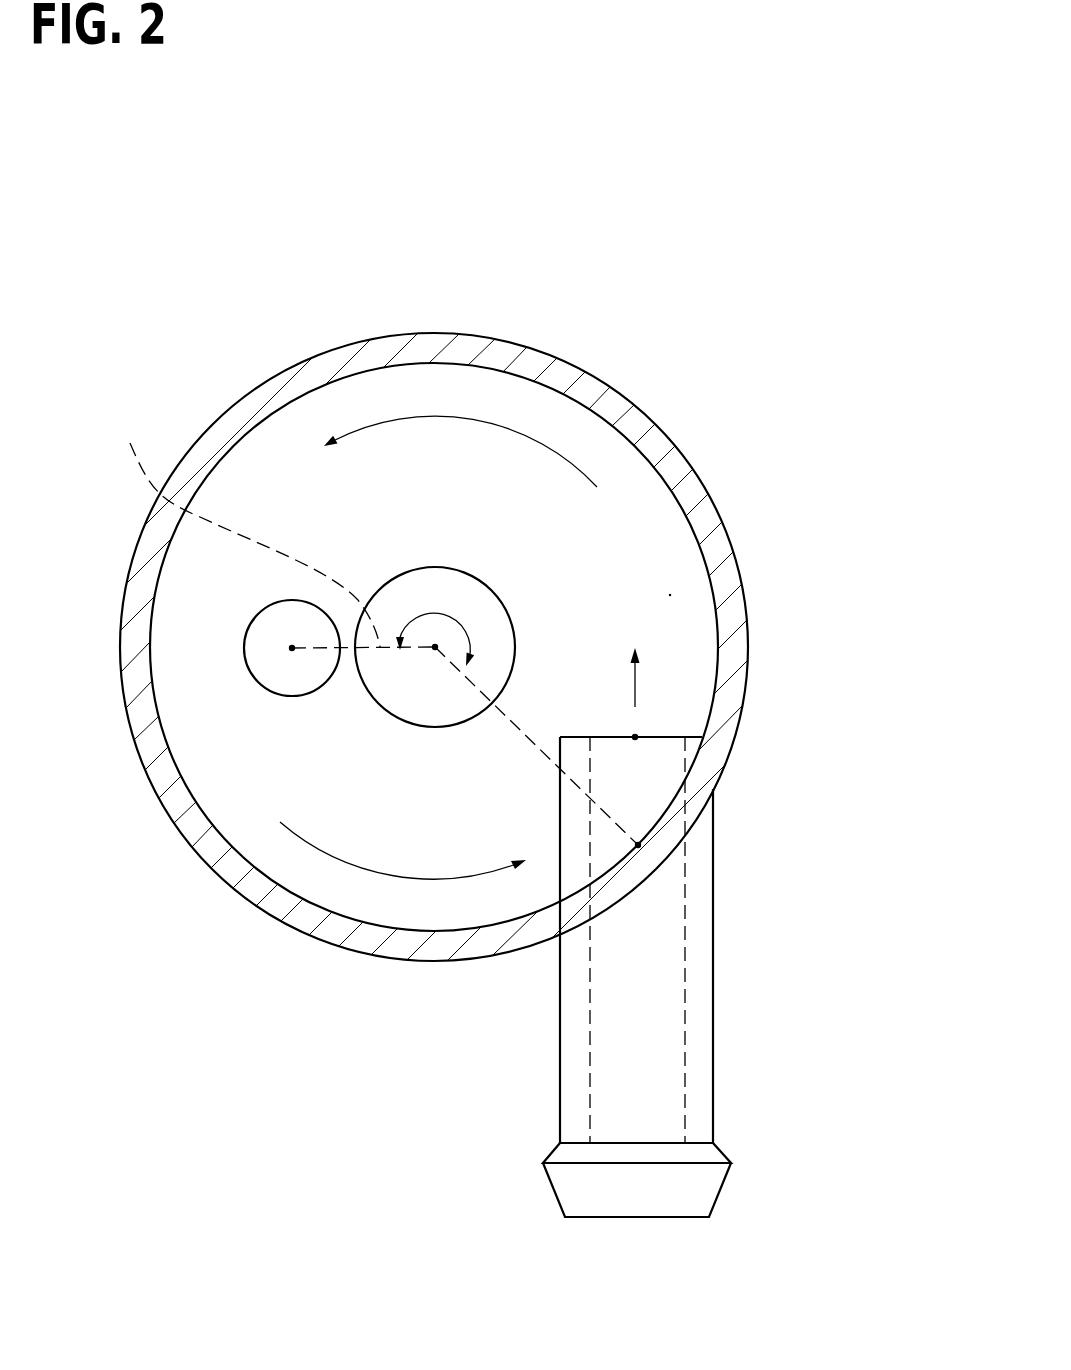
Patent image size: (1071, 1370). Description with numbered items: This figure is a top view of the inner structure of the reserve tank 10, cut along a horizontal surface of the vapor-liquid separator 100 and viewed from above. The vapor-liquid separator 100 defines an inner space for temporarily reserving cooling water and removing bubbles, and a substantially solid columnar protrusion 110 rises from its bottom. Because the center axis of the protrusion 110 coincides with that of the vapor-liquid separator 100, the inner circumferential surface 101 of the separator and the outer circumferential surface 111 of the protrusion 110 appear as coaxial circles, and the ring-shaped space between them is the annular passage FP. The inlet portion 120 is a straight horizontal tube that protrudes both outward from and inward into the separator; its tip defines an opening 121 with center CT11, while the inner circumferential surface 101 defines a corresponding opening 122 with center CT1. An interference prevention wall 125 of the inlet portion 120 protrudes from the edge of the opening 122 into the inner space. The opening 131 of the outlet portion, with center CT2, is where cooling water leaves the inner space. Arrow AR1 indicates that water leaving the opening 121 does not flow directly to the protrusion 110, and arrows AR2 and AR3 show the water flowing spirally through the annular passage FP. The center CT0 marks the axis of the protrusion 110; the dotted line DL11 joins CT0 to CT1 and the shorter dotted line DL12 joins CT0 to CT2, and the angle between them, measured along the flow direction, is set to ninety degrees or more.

The reserve tank 10 is at (752, 298).
The vapor-liquid separator 100 is at (723, 522).
The inner circumferential surface 101 is at (658, 478).
The protrusion 110 is at (397, 598).
The outer circumferential surface 111 is at (503, 610).
The inlet portion 120 is at (713, 1045).
The opening 121 is at (658, 737).
The opening 122 is at (662, 818).
The interference prevention wall 125 is at (568, 842).
The opening 131 is at (263, 667).
The arrow AR1 is at (642, 685).
The arrow AR2 is at (463, 418).
The arrow AR3 is at (390, 877).
The center CT0 is at (435, 647).
The center CT1 is at (638, 845).
The center CT2 is at (292, 648).
The center CT11 is at (637, 737).
The dotted line DL11 is at (607, 812).
The dotted line DL12 is at (237, 532).
The annular passage FP is at (670, 595).